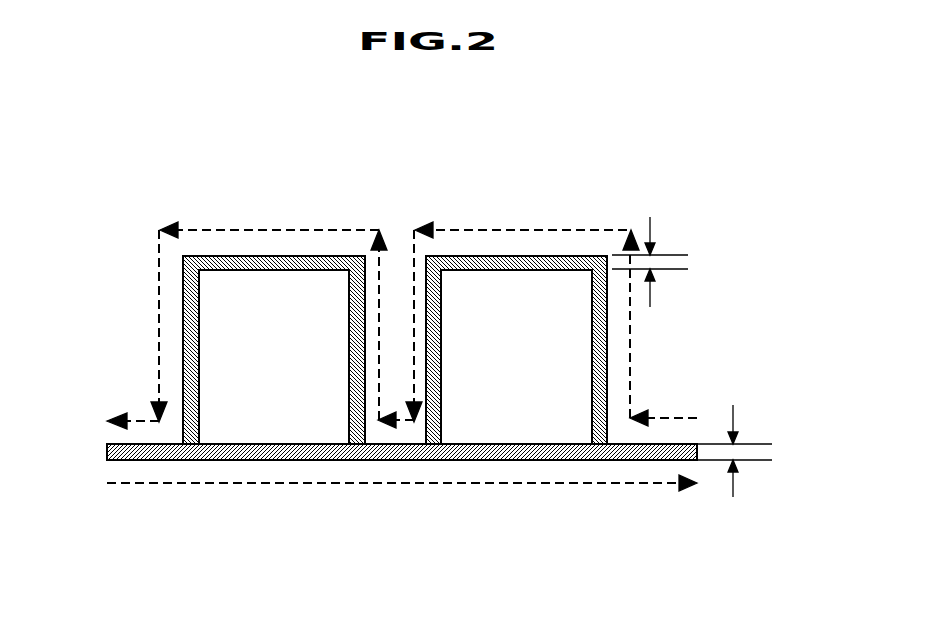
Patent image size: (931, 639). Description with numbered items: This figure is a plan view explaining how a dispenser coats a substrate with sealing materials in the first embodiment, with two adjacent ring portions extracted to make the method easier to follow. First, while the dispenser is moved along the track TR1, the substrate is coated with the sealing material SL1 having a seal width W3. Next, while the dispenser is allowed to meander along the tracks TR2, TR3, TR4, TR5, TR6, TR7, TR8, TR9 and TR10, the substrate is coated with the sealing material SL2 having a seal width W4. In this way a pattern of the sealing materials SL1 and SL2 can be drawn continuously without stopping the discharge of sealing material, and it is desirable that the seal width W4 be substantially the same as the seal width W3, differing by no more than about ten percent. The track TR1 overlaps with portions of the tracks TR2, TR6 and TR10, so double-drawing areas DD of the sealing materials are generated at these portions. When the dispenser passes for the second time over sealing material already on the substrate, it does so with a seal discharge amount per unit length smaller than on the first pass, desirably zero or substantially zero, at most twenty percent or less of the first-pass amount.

The sealing material SL1 is at (242, 462).
The sealing material SL2 is at (222, 258).
The double-drawing area DD is at (398, 462).
The track TR1 is at (558, 485).
The track TR2 is at (677, 418).
The track TR3 is at (630, 345).
The track TR4 is at (513, 229).
The track TR5 is at (420, 250).
The track TR6 is at (412, 422).
The track TR7 is at (380, 305).
The track TR8 is at (277, 229).
The track TR9 is at (158, 330).
The track TR10 is at (147, 420).
The seal width W3 is at (761, 451).
The seal width W4 is at (675, 262).